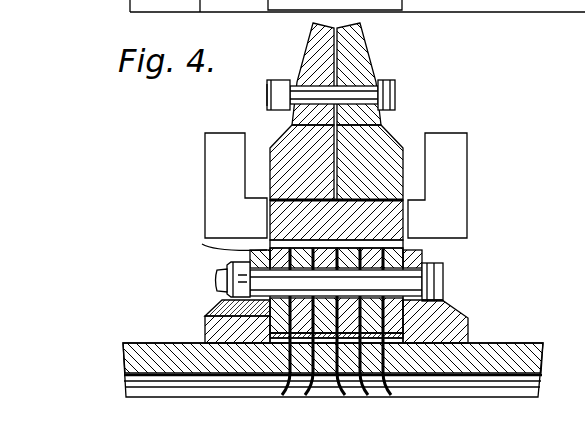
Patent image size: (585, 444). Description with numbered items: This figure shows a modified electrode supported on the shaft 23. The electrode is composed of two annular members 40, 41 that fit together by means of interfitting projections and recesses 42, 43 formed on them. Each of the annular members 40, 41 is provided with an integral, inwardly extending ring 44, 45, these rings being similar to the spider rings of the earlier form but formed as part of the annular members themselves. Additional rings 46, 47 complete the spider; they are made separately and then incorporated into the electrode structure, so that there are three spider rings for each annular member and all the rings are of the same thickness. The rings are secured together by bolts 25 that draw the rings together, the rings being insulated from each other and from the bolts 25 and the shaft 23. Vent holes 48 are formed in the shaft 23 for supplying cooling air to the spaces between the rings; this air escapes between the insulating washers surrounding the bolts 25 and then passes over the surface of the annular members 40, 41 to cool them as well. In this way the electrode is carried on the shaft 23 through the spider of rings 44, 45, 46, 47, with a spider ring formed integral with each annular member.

The annular member 40 is at (300, 145).
The annular member 41 is at (435, 120).
The recess 43 is at (397, 182).
The projection 42 is at (390, 215).
The integral inwardly extending ring 44 is at (196, 260).
The integral inwardly extending ring 45 is at (422, 260).
The bolt 25 is at (499, 295).
The additional ring 46 is at (213, 307).
The additional ring 47 is at (205, 327).
The vent hole 48 is at (403, 360).
The shaft 23 is at (157, 358).